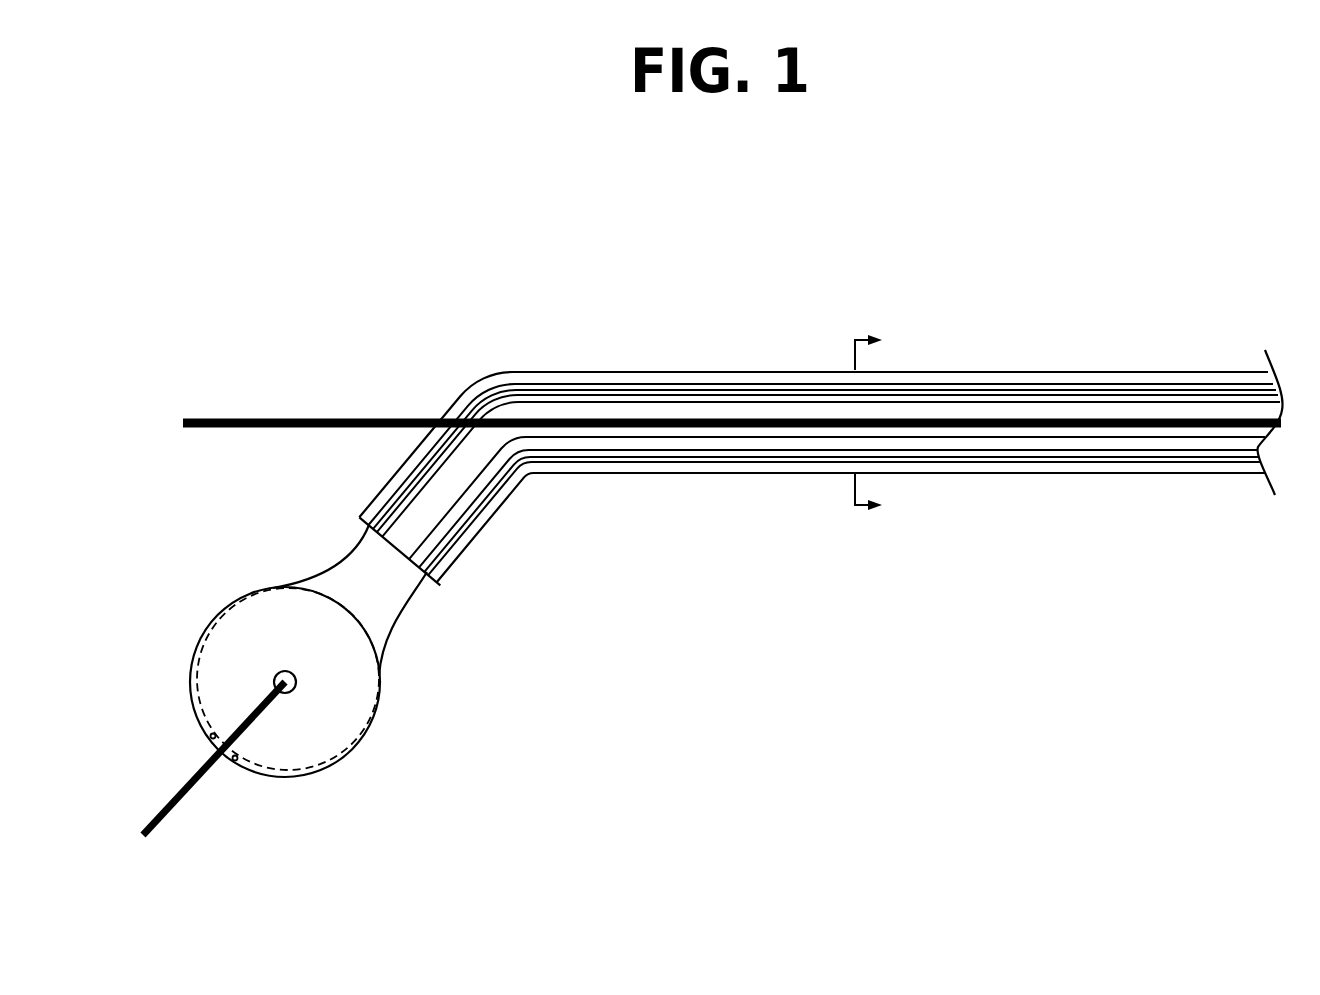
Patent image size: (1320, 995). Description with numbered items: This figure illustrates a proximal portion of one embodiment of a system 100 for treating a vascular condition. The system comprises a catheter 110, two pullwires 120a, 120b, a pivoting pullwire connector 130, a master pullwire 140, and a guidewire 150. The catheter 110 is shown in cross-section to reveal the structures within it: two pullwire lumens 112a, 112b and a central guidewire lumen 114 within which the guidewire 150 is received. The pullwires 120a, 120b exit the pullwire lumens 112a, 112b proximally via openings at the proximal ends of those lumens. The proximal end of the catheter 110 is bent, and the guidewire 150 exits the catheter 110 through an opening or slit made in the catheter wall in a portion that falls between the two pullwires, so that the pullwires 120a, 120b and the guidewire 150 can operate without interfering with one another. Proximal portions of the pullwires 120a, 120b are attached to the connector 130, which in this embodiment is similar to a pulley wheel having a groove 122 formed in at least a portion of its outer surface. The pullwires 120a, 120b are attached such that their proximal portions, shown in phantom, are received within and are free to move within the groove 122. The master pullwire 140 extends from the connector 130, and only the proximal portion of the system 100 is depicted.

The system for treating a vascular condition 100 is at (163, 176).
The catheter 110 is at (585, 371).
The pullwire lumen 112a is at (675, 385).
The pullwire lumen 112b is at (685, 457).
The central guidewire lumen 114 is at (768, 410).
The pullwire 120a is at (1068, 388).
The pullwire 120b is at (1068, 455).
The groove 122 is at (355, 752).
The pivoting pullwire connector 130 is at (332, 685).
The master pullwire 140 is at (170, 812).
The guidewire 150 is at (222, 428).